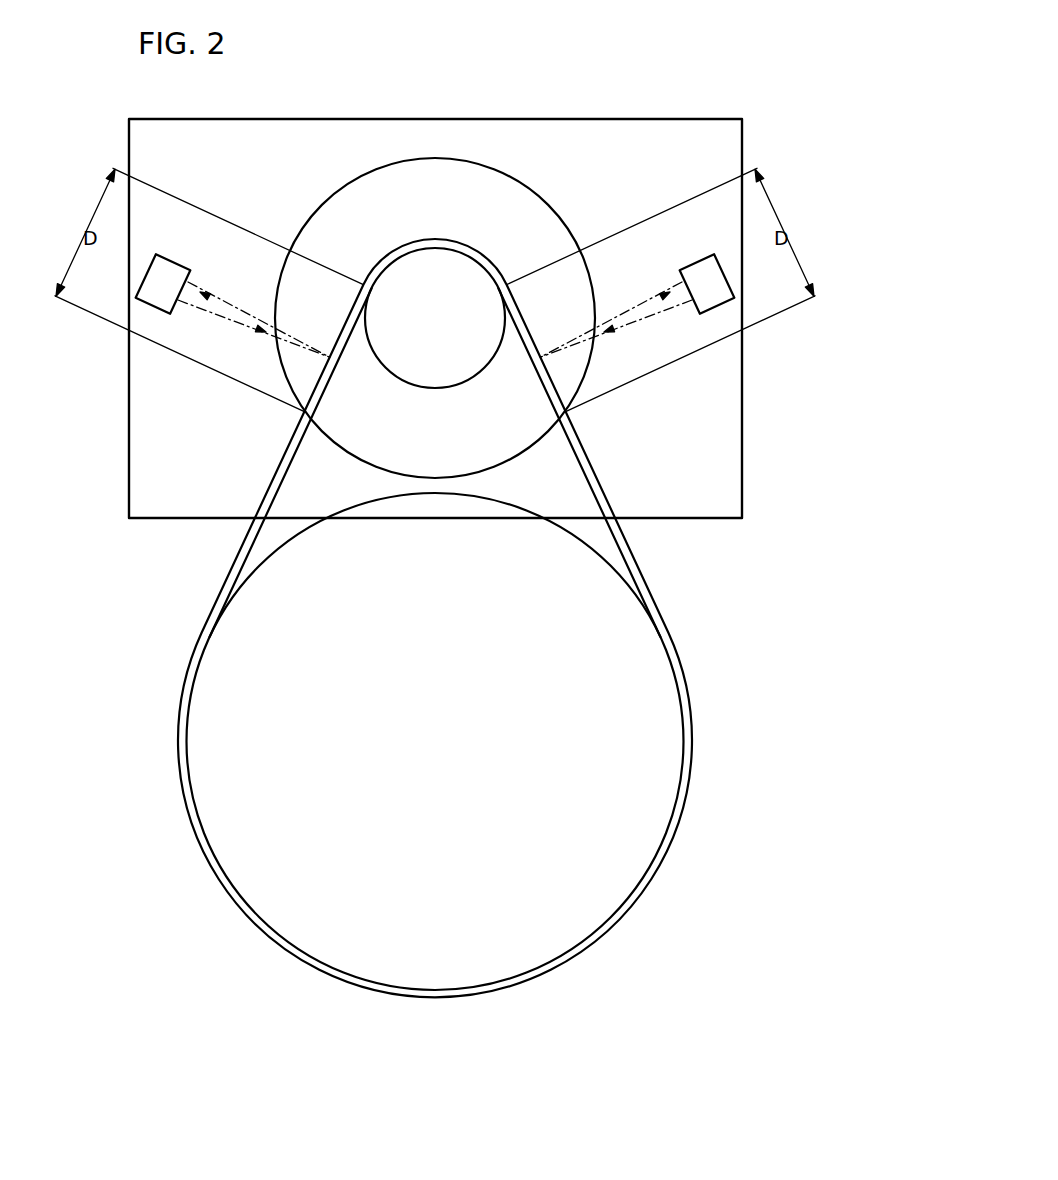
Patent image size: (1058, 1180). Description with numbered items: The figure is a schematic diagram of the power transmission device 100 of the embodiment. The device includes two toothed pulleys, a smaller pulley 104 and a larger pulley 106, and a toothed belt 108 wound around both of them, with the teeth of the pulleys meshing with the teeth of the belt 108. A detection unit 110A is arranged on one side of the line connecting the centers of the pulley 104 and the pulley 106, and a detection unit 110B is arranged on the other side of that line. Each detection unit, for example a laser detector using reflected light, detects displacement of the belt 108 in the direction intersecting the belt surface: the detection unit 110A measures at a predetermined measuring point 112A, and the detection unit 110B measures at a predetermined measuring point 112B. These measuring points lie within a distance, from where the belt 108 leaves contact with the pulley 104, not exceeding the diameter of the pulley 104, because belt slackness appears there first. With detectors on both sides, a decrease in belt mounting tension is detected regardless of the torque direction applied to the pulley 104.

The power transmission device 100 is at (727, 64).
The pulley 104 is at (402, 257).
The pulley 106 is at (673, 663).
The belt 108 is at (645, 587).
The detection unit 110A is at (168, 268).
The detection unit 110B is at (702, 267).
The measuring point 112A is at (327, 347).
The measuring point 112B is at (543, 347).